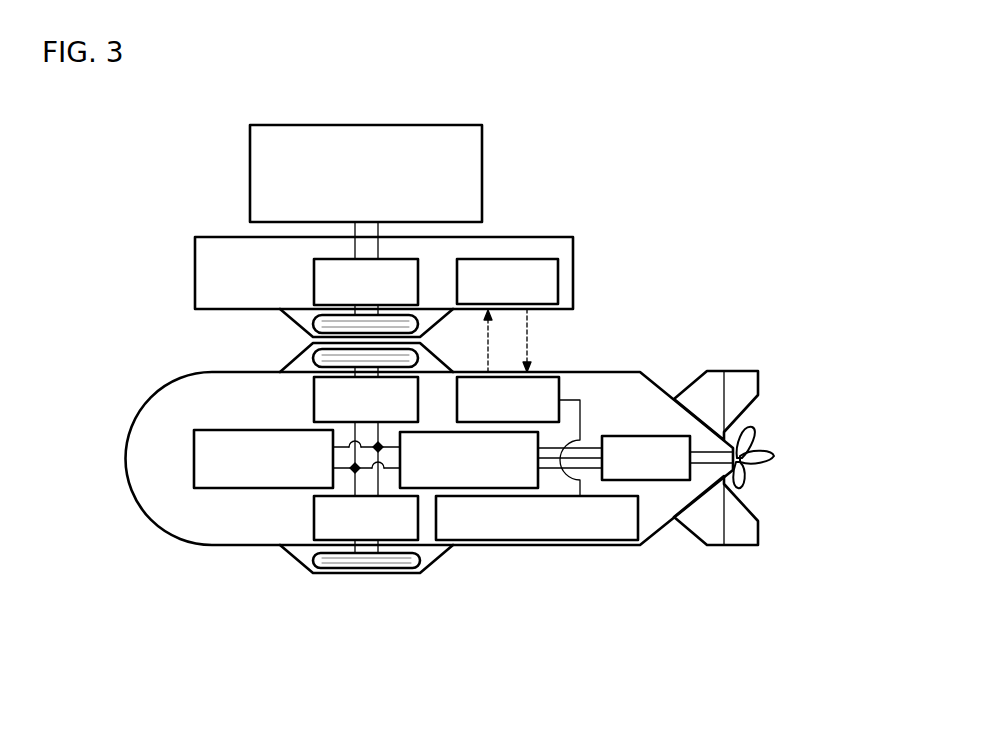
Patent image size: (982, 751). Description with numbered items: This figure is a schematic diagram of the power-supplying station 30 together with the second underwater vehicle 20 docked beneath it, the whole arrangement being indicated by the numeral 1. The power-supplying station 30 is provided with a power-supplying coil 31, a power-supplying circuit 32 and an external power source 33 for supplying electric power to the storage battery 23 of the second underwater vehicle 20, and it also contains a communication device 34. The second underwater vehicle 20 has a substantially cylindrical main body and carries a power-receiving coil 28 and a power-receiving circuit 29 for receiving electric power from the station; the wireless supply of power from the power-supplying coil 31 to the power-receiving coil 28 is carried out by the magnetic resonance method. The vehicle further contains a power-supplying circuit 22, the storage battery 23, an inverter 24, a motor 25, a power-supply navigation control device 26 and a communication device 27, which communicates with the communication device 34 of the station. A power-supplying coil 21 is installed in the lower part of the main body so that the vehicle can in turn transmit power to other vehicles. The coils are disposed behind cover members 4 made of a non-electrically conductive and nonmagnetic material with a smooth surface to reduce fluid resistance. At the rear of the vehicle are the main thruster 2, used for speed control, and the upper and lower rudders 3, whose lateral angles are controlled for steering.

The power supply system 1 is at (124, 188).
The main thruster 2 is at (772, 450).
The upper and lower rudders 3 is at (760, 383).
The cover member 4 is at (433, 328).
The second underwater vehicle 20 is at (126, 460).
The power-supplying coil 21 is at (305, 557).
The power-supplying circuit 22 is at (314, 522).
The storage battery 23 is at (194, 457).
The inverter 24 is at (430, 488).
The motor 25 is at (645, 436).
The power-supply navigation control device 26 is at (638, 517).
The communication device 27 is at (560, 390).
The power-receiving coil 28 is at (312, 355).
The power-receiving circuit 29 is at (314, 402).
The power-supplying station 30 is at (195, 270).
The power-supplying coil 31 is at (312, 324).
The power-supplying circuit 32 is at (314, 280).
The external power source 33 is at (484, 173).
The communication device 34 is at (560, 285).